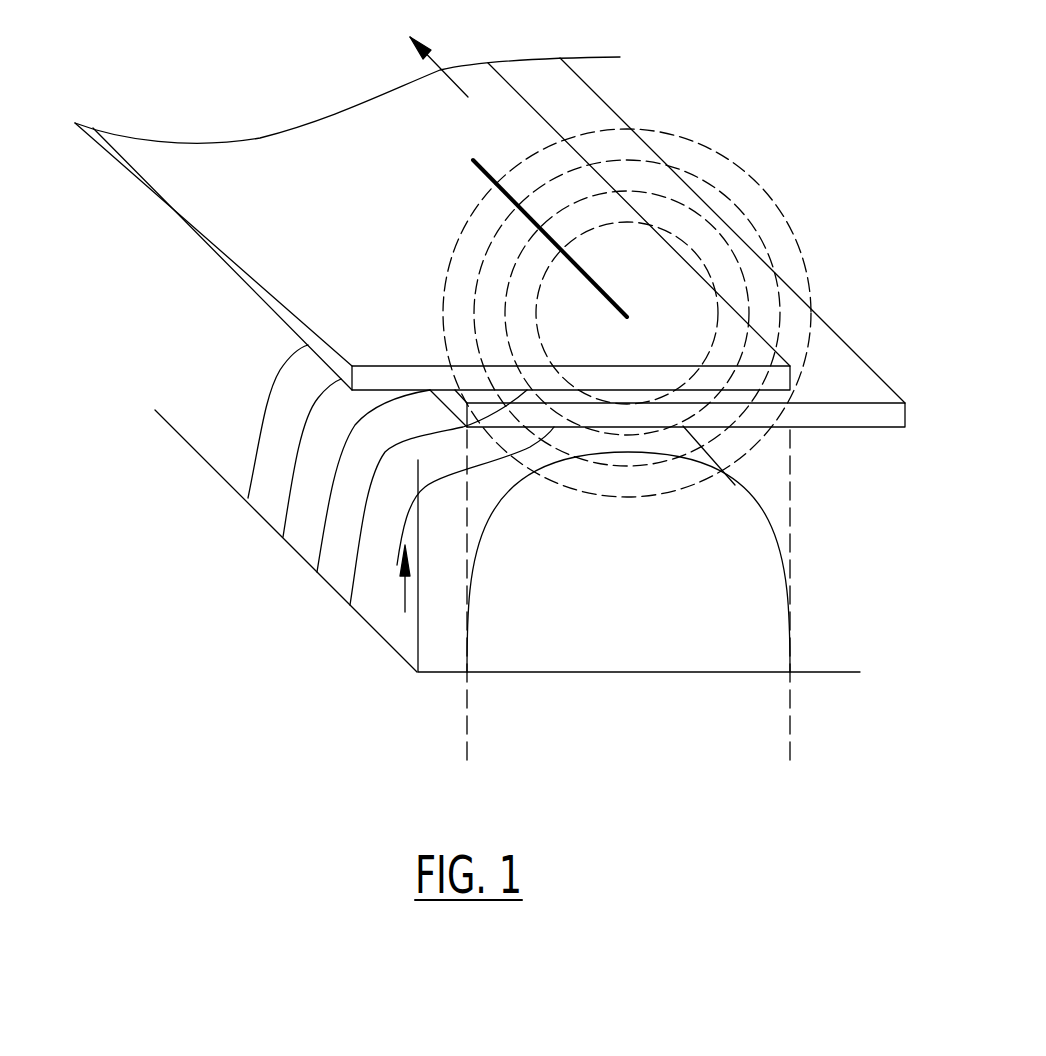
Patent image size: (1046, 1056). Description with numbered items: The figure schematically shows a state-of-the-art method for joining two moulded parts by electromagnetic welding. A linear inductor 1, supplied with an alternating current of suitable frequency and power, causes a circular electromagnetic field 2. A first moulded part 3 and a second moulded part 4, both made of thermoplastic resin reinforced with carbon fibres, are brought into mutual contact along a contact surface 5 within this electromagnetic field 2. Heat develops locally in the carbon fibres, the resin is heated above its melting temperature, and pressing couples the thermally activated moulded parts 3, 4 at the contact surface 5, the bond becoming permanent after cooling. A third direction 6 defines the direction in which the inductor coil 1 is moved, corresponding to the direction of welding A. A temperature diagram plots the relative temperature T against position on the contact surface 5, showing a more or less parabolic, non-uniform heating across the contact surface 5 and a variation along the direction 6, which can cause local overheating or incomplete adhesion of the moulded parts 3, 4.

The linear inductor 1 is at (473, 160).
The circular electromagnetic field 2 is at (832, 188).
The first moulded part 3 is at (384, 368).
The second moulded part 4 is at (872, 412).
The contact surface 5 is at (790, 753).
The third direction 6 is at (284, 517).
The direction of welding A is at (437, 63).
The relative temperature T is at (386, 637).